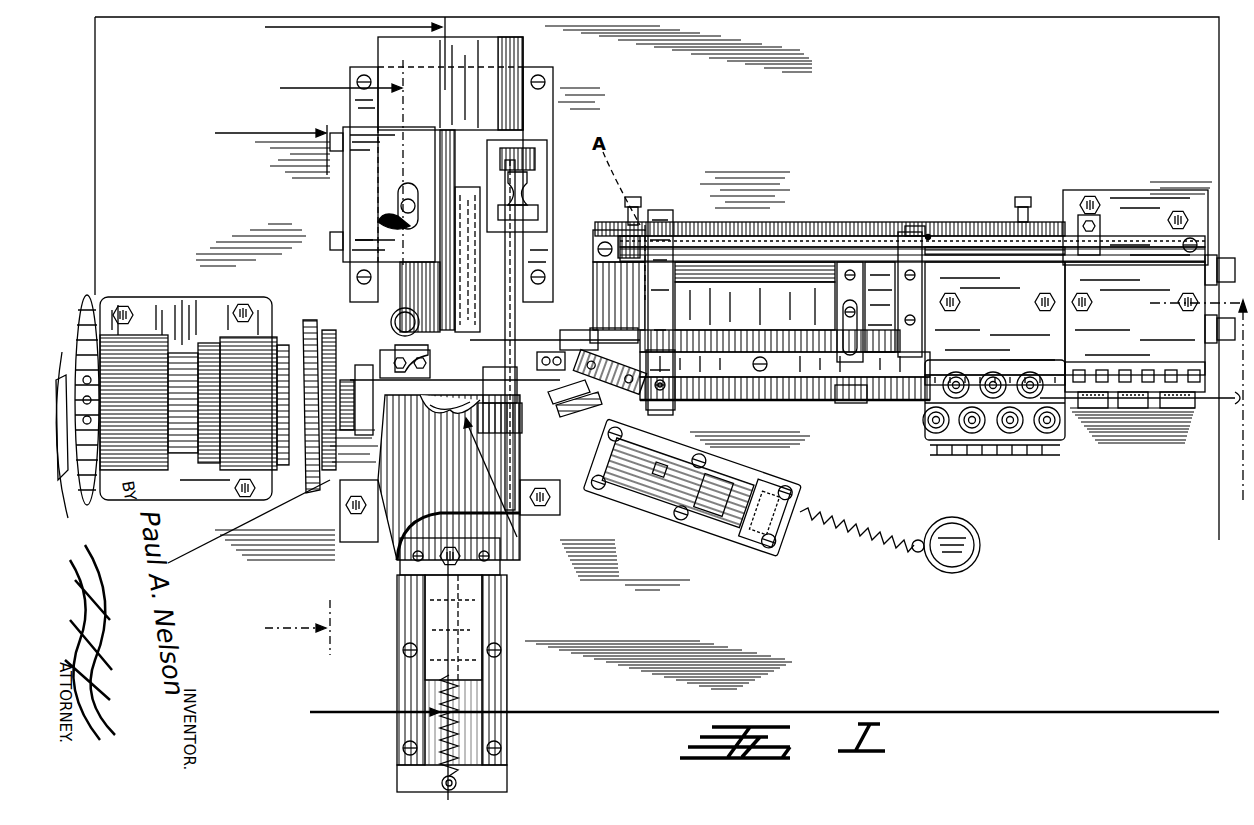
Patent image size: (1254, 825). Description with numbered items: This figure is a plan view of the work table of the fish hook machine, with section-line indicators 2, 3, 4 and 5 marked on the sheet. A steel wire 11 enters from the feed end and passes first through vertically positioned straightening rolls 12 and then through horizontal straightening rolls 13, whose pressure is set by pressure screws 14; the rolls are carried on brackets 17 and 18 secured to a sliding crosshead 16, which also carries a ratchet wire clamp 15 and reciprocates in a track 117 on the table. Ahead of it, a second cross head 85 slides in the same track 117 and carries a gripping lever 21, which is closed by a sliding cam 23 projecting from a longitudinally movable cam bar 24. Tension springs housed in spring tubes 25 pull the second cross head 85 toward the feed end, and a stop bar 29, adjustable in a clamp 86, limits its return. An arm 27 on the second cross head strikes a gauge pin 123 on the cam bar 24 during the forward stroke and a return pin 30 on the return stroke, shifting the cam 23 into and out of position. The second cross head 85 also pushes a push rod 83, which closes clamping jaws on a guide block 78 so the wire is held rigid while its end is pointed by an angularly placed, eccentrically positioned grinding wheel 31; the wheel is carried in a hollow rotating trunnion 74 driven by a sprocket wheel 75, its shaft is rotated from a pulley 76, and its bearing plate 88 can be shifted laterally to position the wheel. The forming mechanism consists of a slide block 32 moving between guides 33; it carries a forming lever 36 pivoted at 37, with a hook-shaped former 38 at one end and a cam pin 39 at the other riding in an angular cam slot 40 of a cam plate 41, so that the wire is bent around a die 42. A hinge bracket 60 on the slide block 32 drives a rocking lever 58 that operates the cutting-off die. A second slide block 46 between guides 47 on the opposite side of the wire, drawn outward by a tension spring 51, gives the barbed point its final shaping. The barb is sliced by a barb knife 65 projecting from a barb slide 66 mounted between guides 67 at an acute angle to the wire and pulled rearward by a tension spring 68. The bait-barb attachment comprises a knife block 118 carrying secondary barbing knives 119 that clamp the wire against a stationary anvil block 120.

The section line 2- 2 is at (738, 408).
The section line 3- 3 is at (285, 323).
The section line 4- 4 is at (258, 388).
The section line 5- 5 is at (855, 426).
The steel wire 11 is at (1212, 402).
The vertically positioned straightening rolls 12 is at (1140, 405).
The horizontal straightening rolls 13 is at (1012, 418).
The pressure screws 14 is at (1138, 372).
The ratchet wire clamp 15 is at (858, 402).
The sliding crosshead 16 is at (890, 270).
The bracket 17 is at (1130, 282).
The bracket 18 is at (978, 278).
The gripping lever 21 is at (665, 389).
The sliding cam 23 is at (720, 224).
The cam bar 24 is at (812, 262).
The spring tubes 25 is at (800, 282).
The arm 27 is at (905, 232).
The stop bar 29 is at (990, 250).
The return pin 30 is at (928, 236).
The grinding wheel 31 is at (330, 486).
The slide block 32 is at (525, 54).
The guides 33 is at (355, 75).
The forming lever 36 is at (403, 273).
The pivot 37 is at (393, 319).
The hook-shaped former 38 is at (398, 349).
The cam pin 39 is at (400, 206).
The angular cam slot 40 is at (378, 223).
The cam plate 41 is at (355, 166).
The die 42 is at (441, 425).
The second slide block 46 is at (435, 614).
The guides 47 is at (495, 622).
The tension spring 51 is at (455, 744).
The rocking lever 58 is at (512, 260).
The hinge bracket 60 is at (520, 151).
The barb knife 65 is at (602, 445).
The barb slide 66 is at (672, 484).
The guides 67 is at (778, 470).
The tension spring 68 is at (868, 537).
The hollow rotating trunnion 74 is at (148, 350).
The sprocket wheel 75 is at (96, 295).
The pulley 76 is at (69, 444).
The guide block 78 is at (370, 382).
The push rod 83 is at (582, 328).
The second cross head 85 is at (675, 250).
The clamp 86 is at (1092, 213).
The bearing plate 88 is at (328, 332).
The track 117 is at (808, 325).
The knife block 118 is at (655, 362).
The secondary barbing knives 119 is at (560, 408).
The stationary anvil block 120 is at (592, 418).
The gauge pin 123 is at (748, 240).